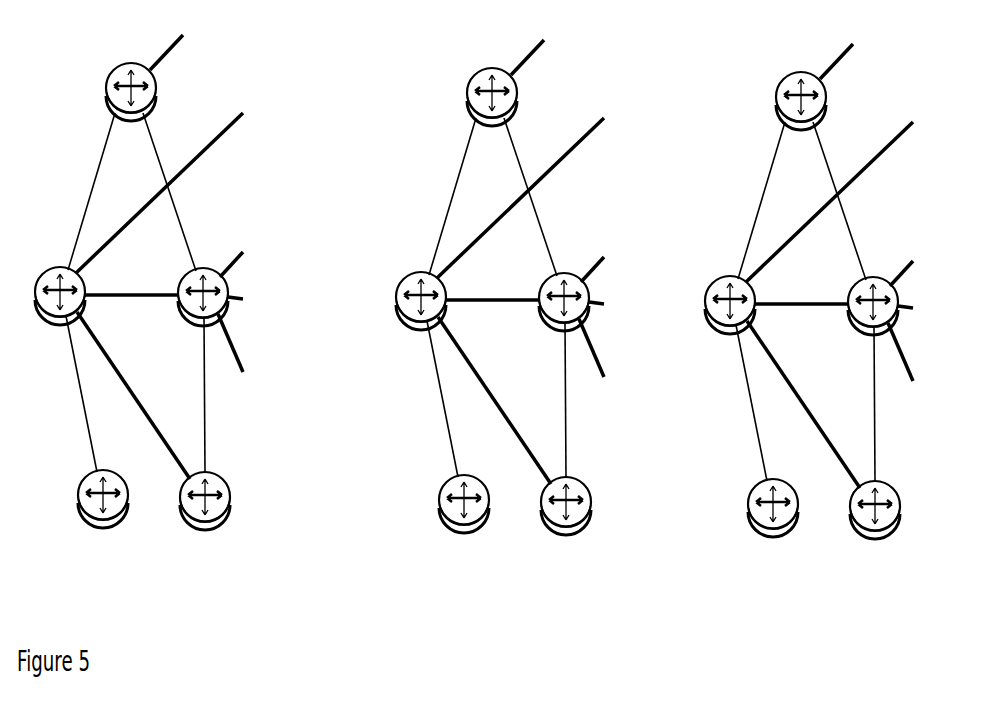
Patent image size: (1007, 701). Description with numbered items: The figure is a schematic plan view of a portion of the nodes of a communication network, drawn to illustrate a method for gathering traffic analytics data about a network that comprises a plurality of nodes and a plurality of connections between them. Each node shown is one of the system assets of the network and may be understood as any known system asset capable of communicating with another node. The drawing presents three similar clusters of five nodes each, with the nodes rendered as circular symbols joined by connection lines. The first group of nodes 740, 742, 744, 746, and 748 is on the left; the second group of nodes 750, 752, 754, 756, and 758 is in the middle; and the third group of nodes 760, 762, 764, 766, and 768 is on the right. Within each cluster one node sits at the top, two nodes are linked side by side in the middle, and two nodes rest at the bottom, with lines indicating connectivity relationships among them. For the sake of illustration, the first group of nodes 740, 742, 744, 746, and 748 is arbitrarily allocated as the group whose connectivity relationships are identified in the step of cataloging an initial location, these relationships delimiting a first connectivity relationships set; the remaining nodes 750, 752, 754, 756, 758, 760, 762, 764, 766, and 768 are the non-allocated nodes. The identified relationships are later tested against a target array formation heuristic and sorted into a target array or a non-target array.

The node 740 is at (150, 467).
The node 742 is at (36, 280).
The node 744 is at (176, 284).
The node 746 is at (232, 493).
The node 748 is at (106, 101).
The node 750 is at (475, 493).
The node 752 is at (419, 281).
The node 754 is at (551, 292).
The node 756 is at (578, 496).
The node 758 is at (480, 97).
The node 760 is at (784, 497).
The node 762 is at (728, 285).
The node 764 is at (860, 296).
The node 766 is at (887, 500).
The node 768 is at (789, 101).